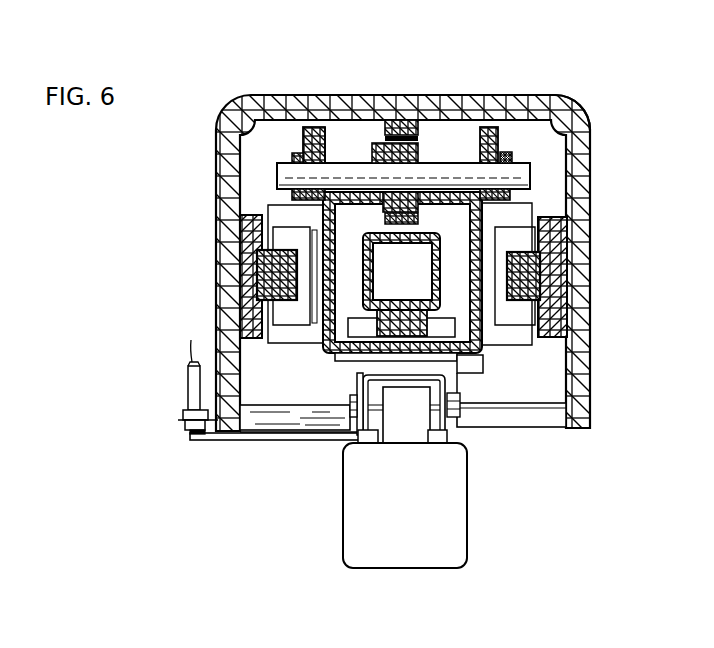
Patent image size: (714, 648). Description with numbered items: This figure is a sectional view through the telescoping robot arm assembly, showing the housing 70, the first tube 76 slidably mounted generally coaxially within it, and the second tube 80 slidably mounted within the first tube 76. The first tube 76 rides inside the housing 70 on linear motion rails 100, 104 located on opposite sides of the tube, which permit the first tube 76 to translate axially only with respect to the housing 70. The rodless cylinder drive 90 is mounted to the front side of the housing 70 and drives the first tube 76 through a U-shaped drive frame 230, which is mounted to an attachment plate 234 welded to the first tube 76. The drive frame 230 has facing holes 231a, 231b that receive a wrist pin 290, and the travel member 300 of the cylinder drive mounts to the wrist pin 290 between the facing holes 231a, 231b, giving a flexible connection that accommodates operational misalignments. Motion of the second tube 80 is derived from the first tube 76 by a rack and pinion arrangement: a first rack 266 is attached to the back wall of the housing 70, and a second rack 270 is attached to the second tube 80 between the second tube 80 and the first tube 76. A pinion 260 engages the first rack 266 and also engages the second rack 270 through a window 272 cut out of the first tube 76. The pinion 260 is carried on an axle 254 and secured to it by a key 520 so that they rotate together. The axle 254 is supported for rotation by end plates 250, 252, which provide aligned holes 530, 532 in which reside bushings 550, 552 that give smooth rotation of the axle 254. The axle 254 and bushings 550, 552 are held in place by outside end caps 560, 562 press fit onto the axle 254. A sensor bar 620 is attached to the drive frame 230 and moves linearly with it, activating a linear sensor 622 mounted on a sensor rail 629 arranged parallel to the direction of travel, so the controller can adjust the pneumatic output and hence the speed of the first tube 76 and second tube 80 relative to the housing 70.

The housing 70 is at (505, 100).
The first tube 76 is at (340, 257).
The second tube 80 is at (373, 281).
The rodless cylinder drive 90 is at (468, 503).
The linear motion rail 100 is at (262, 262).
The linear motion rail 104 is at (540, 262).
The drive frame 230 is at (450, 389).
The facing hole 231a is at (357, 390).
The facing hole 231b is at (460, 395).
The attachment plate 234 is at (470, 362).
The end plate 250 is at (300, 125).
The end plate 252 is at (482, 130).
The axle 254 is at (530, 172).
The pinion 260 is at (352, 130).
The first rack 266 is at (405, 120).
The second rack 270 is at (418, 220).
The window 272 is at (383, 212).
The wrist pin 290 is at (457, 415).
The travel member 300 is at (390, 428).
The key 520 is at (422, 150).
The aligned hole 530 is at (352, 125).
The aligned hole 532 is at (478, 157).
The bushing 550 is at (292, 150).
The bushing 552 is at (507, 152).
The outside end cap 560 is at (277, 166).
The outside end cap 562 is at (572, 102).
The sensor bar 620 is at (225, 440).
The linear sensor 622 is at (188, 390).
The sensor rail 629 is at (185, 420).